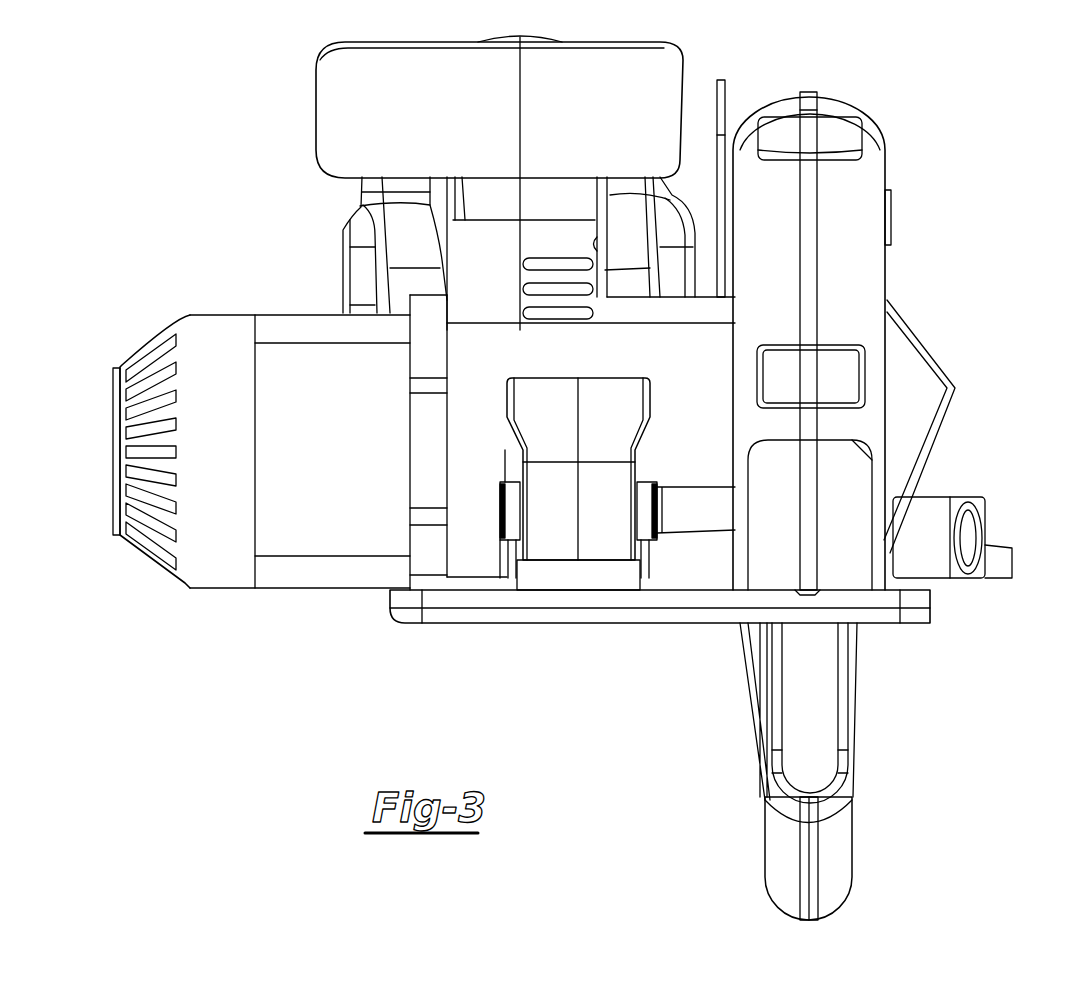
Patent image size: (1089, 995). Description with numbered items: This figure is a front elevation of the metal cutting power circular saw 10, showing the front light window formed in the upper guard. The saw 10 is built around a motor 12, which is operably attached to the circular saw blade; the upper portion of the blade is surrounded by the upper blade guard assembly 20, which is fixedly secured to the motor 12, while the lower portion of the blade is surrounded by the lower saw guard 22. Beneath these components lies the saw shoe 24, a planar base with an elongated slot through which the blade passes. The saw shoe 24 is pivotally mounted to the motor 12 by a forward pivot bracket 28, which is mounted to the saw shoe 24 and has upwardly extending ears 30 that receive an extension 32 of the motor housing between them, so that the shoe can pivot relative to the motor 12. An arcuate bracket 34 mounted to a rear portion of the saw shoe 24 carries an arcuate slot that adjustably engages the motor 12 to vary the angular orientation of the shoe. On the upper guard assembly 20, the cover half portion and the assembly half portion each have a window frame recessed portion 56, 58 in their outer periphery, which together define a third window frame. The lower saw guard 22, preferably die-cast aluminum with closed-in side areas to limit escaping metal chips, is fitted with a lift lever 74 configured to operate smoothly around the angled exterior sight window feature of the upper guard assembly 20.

The metal cutting power circular saw 10 is at (228, 195).
The motor 12 is at (277, 313).
The upper blade guard assembly 20 is at (887, 173).
The lower saw guard 22 is at (855, 846).
The saw shoe 24 is at (588, 625).
The forward pivot bracket 28 is at (514, 540).
The upwardly extending ears 30 is at (512, 582).
The extension of the motor housing 32 is at (555, 548).
The arcuate bracket 34 is at (726, 106).
The window frame recessed portion 56 is at (890, 512).
The window frame recessed portion 58 is at (750, 520).
The lift lever 74 is at (1003, 568).